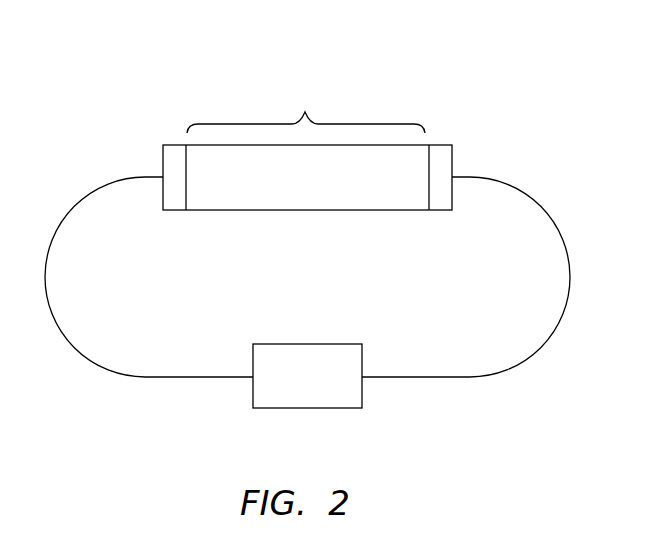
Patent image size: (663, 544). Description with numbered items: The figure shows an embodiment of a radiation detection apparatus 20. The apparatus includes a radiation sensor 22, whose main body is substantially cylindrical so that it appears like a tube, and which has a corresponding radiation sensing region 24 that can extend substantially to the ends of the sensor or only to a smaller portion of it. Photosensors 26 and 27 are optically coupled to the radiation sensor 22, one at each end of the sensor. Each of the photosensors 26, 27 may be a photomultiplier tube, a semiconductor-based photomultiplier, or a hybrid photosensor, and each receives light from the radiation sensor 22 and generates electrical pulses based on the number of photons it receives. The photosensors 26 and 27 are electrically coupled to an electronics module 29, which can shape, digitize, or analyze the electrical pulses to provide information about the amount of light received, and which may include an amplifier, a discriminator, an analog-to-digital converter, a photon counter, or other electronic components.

The radiation detection apparatus 20 is at (530, 65).
The radiation sensor 22 is at (307, 177).
The radiation sensing region 24 is at (306, 109).
The photosensor 26 is at (170, 202).
The photosensor 27 is at (439, 202).
The electronics module 29 is at (307, 376).